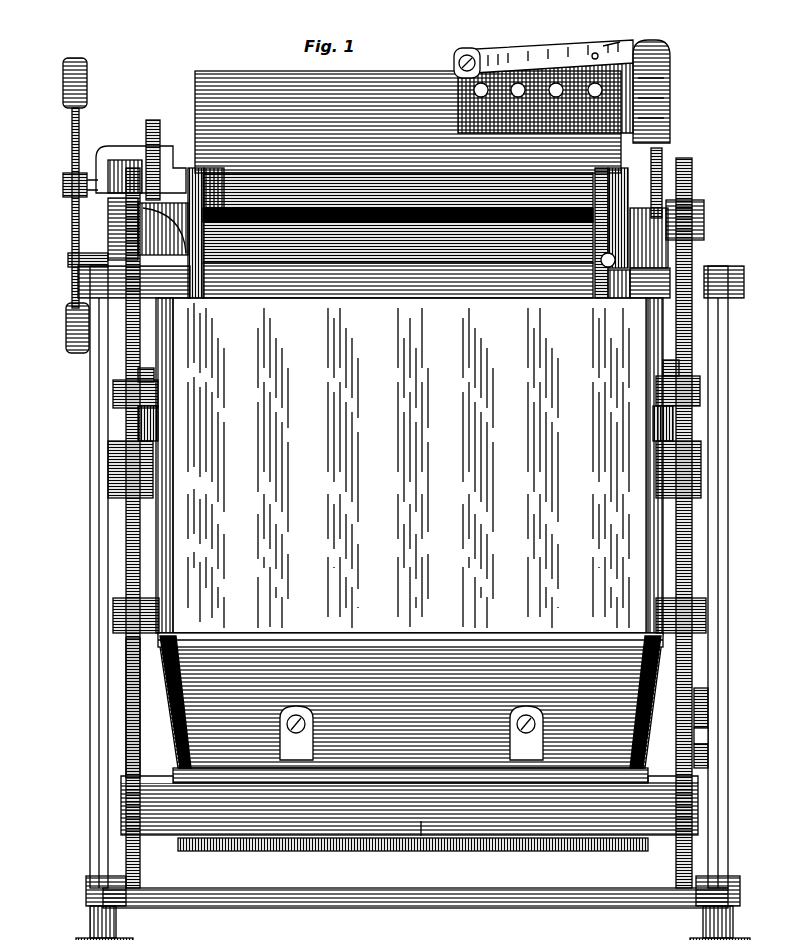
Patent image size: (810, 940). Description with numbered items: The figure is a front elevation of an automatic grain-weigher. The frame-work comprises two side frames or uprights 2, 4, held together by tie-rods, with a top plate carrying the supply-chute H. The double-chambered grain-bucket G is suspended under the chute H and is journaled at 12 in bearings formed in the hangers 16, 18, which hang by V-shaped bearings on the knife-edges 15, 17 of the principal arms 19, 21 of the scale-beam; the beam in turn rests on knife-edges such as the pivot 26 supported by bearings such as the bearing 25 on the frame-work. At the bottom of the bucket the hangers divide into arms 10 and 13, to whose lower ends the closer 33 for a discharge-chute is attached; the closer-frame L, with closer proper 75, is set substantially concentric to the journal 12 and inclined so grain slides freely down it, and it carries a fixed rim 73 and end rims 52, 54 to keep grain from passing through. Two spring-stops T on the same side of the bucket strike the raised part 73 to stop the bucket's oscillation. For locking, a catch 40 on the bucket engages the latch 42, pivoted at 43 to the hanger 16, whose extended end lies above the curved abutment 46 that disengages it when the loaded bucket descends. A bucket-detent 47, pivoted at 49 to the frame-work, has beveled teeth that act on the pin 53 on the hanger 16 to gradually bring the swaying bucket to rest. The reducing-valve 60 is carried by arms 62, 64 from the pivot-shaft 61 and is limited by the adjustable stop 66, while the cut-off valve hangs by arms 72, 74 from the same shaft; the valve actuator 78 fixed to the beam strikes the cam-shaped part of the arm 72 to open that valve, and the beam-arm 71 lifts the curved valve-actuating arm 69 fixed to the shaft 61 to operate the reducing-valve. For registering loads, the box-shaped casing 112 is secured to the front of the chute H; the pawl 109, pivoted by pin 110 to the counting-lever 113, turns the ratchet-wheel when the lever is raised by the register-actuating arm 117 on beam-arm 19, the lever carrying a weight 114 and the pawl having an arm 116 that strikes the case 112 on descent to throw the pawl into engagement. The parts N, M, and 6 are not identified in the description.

The supply-chute H is at (234, 76).
The register casing 112 is at (530, 80).
The pawl arm 116 is at (459, 45).
The pin 110 is at (586, 45).
The counting-lever 113 is at (600, 40).
The pawl 109 is at (617, 62).
The weight 114 is at (657, 99).
The register-actuating arm 117 is at (652, 143).
The principal arm of scale-beam 19 is at (658, 192).
The pivot or knife-edge 15 is at (687, 205).
The cut-off valve arm 72 is at (681, 230).
The valve actuator 78 is at (647, 264).
The bracket 6 is at (720, 260).
The pivot-shaft 61 is at (378, 185).
The reducing-valve arm 62 is at (597, 252).
The adjustable stop 66 is at (607, 290).
The reducing-valve arm 64 is at (210, 248).
The bearing 25 is at (176, 262).
The pivot or knife-edge 26 is at (158, 262).
The cut-off valve arm 74 is at (160, 250).
The pivot or knife-edge 17 is at (108, 215).
The beam-arm 71 is at (144, 138).
The valve-actuating arm 69 is at (145, 112).
The knob N is at (79, 67).
The principal arm of scale-beam 21 is at (100, 240).
The knob M is at (58, 330).
The grain-bucket G is at (409, 465).
The hanger arm 10 is at (683, 668).
The spring-stop T is at (411, 734).
The raised part or fixed rim 73 is at (410, 774).
The closer-frame L is at (267, 817).
The rim 54 is at (163, 766).
The rim 52 is at (640, 766).
The closer 33 is at (503, 813).
The closer proper 75 is at (413, 828).
The reducing-valve 60 is at (415, 914).
The side frame or upright 4 is at (88, 408).
The hanger 18 is at (118, 548).
The hanger arm 13 is at (122, 702).
The latch pivot 43 is at (108, 383).
The latch 42 is at (138, 370).
The catch 40 is at (143, 405).
The curved abutment 46 is at (110, 451).
The journal 12 is at (107, 603).
The side frame or upright 2 is at (711, 333).
The hanger 16 is at (678, 548).
The bucket-detent 47 is at (700, 704).
The pivot 49 is at (716, 728).
The detent pin 53 is at (716, 748).